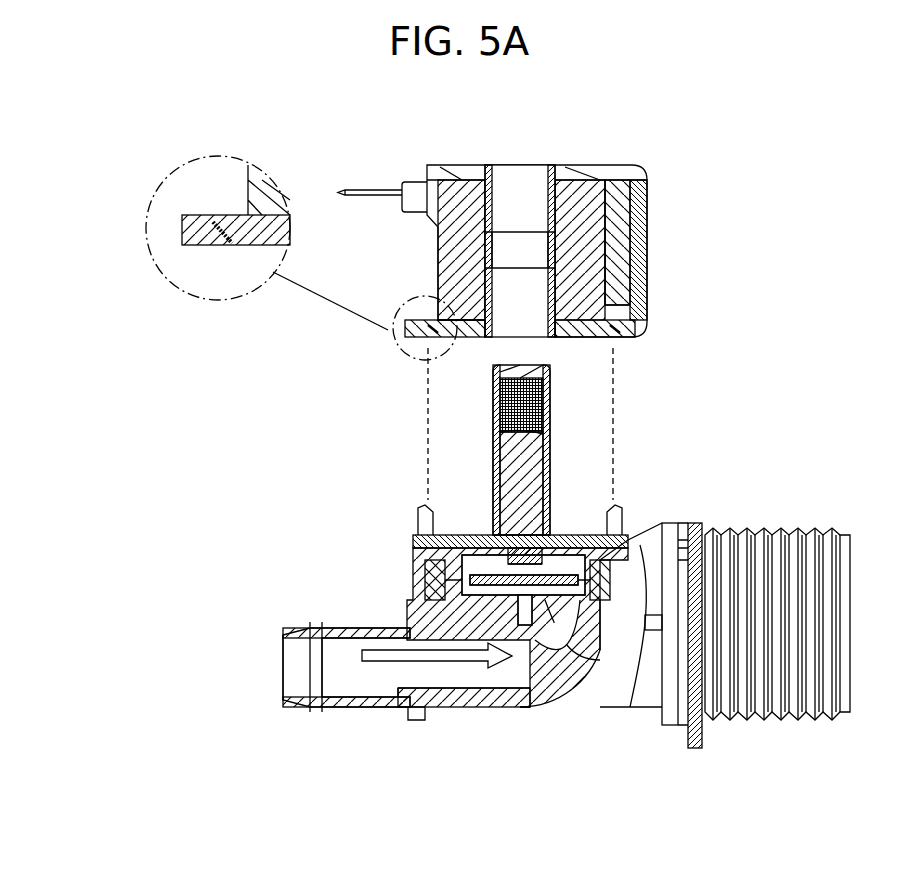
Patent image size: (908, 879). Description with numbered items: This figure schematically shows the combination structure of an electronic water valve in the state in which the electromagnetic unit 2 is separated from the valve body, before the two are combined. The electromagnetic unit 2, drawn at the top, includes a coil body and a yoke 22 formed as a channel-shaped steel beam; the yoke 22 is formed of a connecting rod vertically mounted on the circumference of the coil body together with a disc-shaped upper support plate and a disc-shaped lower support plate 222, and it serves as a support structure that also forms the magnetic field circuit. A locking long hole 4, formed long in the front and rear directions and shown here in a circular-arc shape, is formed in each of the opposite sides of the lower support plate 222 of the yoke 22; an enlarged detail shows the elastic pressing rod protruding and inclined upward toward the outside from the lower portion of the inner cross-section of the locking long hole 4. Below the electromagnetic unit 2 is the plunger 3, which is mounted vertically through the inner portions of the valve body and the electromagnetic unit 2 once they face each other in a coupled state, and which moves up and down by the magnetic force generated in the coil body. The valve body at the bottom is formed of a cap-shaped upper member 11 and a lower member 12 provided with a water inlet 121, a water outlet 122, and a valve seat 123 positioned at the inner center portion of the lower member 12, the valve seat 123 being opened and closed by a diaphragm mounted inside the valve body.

The electromagnetic unit 2 is at (574, 277).
The yoke 22 is at (648, 218).
The lower support plate 222 is at (647, 265).
The locking long hole 4 is at (217, 247).
The plunger 3 is at (515, 462).
The lower member 12 is at (628, 557).
The water outlet 122 is at (333, 707).
The valve seat 123 is at (535, 698).
The upper member 11 is at (630, 700).
The water inlet 121 is at (785, 668).